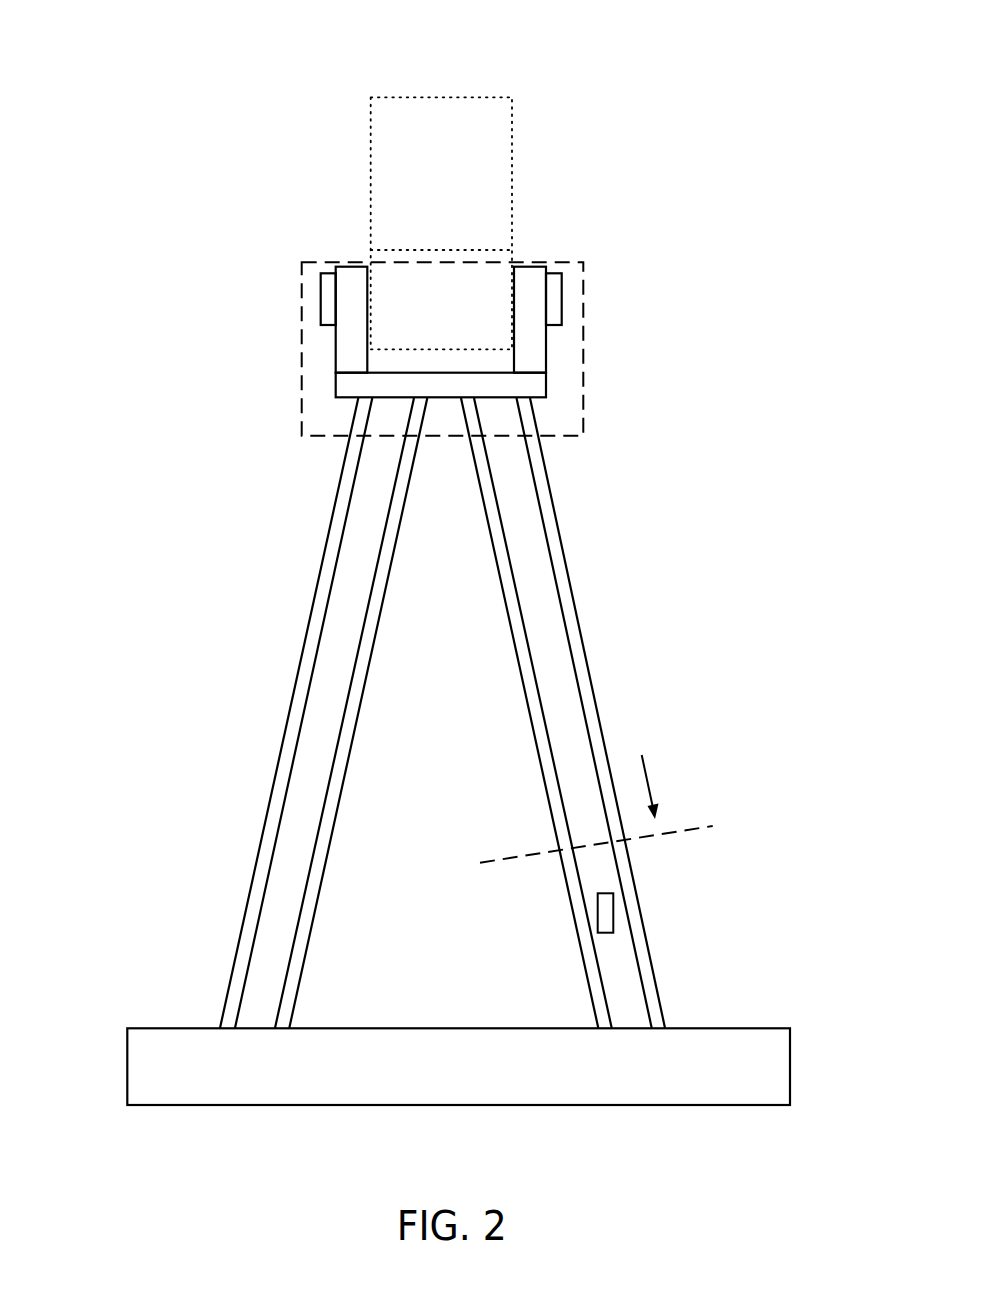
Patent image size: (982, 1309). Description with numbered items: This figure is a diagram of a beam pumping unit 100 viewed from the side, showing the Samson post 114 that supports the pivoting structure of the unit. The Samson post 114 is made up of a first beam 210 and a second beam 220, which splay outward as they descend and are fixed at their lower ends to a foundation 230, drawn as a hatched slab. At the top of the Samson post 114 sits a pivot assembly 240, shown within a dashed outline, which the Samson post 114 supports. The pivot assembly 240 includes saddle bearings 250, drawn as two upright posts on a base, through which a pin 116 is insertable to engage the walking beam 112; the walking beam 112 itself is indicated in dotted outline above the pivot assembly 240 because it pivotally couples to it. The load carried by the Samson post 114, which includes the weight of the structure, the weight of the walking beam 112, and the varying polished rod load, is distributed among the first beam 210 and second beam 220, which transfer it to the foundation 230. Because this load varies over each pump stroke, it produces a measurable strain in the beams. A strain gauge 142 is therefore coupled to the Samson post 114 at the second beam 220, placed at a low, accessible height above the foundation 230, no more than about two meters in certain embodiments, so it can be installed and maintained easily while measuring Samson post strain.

The beam pumping unit 100 is at (342, 59).
The walking beam 112 is at (513, 143).
The Samson post 114 is at (168, 589).
The pin 116 is at (320, 300).
The strain gauge 142 is at (613, 915).
The first beam 210 is at (306, 709).
The second beam 220 is at (546, 537).
The foundation 230 is at (791, 1035).
The pivot assembly 240 is at (585, 420).
The saddle bearings 250 is at (335, 364).